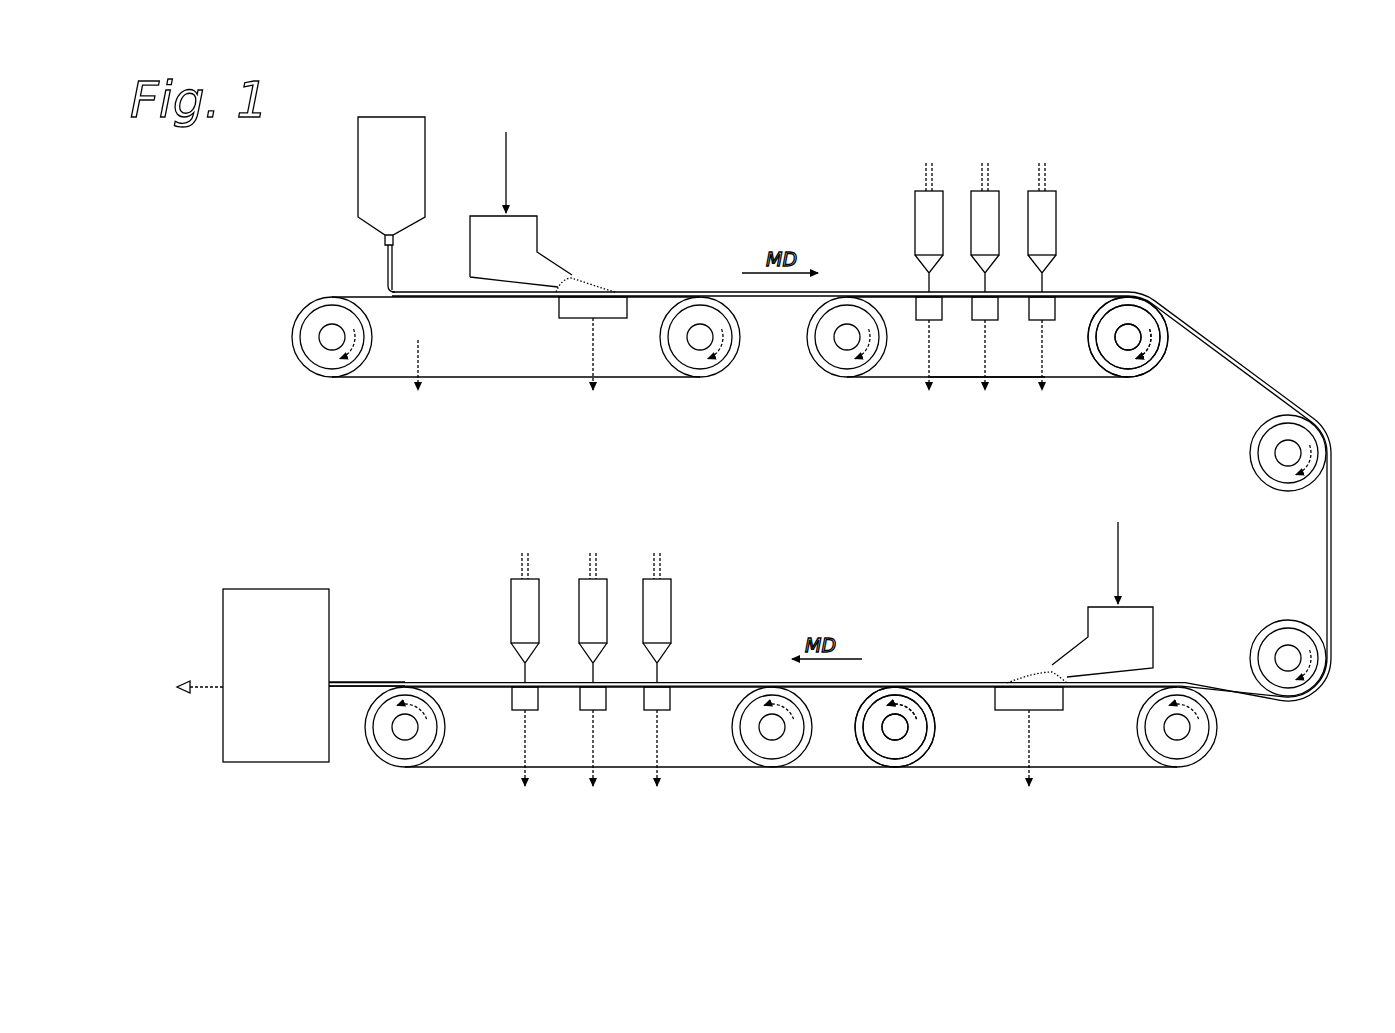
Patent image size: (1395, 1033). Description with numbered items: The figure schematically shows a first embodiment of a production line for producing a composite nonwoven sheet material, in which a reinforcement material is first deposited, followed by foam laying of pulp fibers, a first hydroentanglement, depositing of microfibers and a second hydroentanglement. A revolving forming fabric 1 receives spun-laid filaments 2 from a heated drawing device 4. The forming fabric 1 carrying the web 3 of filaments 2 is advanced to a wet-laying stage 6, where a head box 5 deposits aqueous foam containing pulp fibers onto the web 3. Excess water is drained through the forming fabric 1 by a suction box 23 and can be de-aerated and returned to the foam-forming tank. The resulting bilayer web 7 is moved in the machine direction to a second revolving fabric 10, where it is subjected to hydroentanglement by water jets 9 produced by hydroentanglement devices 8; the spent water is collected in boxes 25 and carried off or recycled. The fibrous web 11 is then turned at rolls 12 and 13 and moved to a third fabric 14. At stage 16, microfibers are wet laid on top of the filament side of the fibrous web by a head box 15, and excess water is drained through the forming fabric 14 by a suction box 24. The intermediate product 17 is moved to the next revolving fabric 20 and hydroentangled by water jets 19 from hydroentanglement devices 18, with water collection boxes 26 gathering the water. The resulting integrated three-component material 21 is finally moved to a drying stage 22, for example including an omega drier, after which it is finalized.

The revolving forming fabric 1 is at (473, 377).
The spun-laid filaments 2 is at (386, 268).
The web 3 is at (422, 291).
The heated drawing device 4 is at (378, 147).
The head box 5 is at (527, 237).
The wet-laying stage 6 is at (590, 281).
The bilayer web 7 is at (720, 292).
The hydroentanglement devices 8 is at (917, 220).
The water jets 9 is at (1045, 285).
The second revolving fabric 10 is at (950, 378).
The fibrous web 11 is at (1118, 297).
The roll 12 is at (1320, 425).
The roll 13 is at (1318, 680).
The third fabric 14 is at (1080, 768).
The head box 15 is at (1095, 622).
The stage 16 is at (1038, 673).
The intermediate product 17 is at (902, 685).
The hydroentanglement devices 18 is at (518, 605).
The water jets 19 is at (522, 672).
The revolving fabric 20 is at (697, 768).
The integrated three-component material 21 is at (355, 685).
The drying stage 22 is at (282, 604).
The suction box 23 is at (610, 318).
The suction box 24 is at (1023, 752).
The boxes 25 is at (1048, 320).
The water collection boxes 26 is at (583, 707).